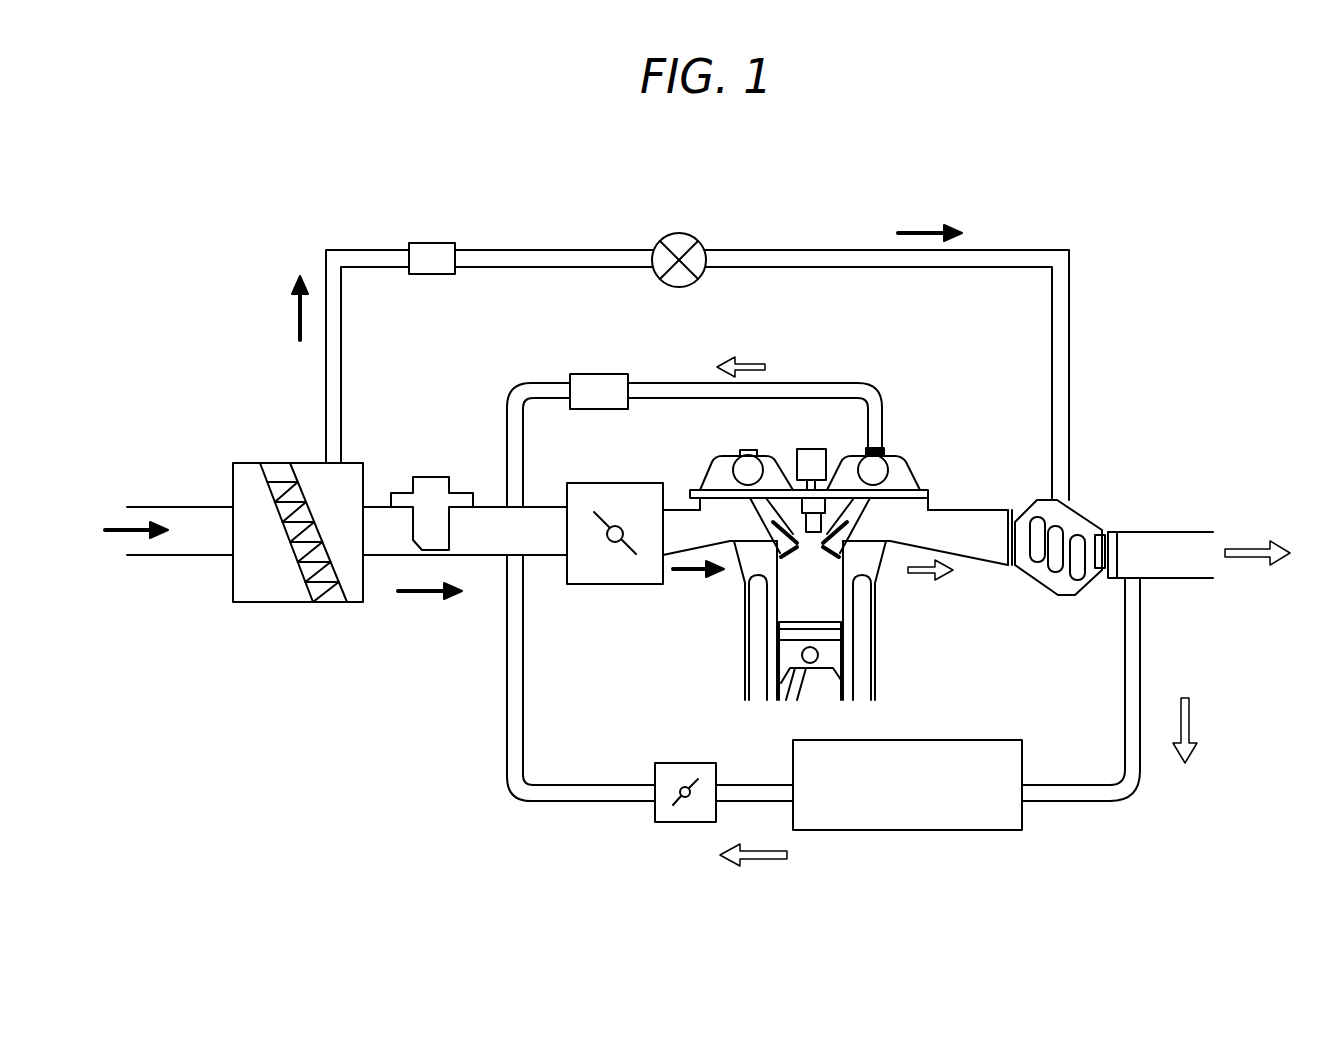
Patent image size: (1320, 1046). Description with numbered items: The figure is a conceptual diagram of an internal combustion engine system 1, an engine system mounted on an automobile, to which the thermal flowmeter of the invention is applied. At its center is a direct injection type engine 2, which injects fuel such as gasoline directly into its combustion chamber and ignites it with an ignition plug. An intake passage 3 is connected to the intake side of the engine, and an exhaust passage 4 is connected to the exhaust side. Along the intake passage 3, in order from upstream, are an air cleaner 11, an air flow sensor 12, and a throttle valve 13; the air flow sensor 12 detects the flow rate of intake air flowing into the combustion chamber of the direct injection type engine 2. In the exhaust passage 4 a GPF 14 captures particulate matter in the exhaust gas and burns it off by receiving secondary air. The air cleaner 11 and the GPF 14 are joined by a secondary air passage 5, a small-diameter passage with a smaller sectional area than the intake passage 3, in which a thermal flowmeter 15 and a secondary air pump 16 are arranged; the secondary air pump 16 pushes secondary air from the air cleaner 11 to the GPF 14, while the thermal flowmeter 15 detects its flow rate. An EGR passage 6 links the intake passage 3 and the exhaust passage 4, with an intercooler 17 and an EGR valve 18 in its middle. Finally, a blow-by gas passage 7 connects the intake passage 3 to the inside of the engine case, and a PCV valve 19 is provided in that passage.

The internal combustion engine system 1 is at (1118, 203).
The direct injection type engine 2 is at (903, 470).
The intake passage 3 is at (172, 505).
The exhaust passage 4 is at (1188, 550).
The secondary air passage 5 is at (585, 248).
The EGR passage 6 is at (1125, 656).
The blow-by gas passage 7 is at (547, 398).
The air cleaner 11 is at (270, 596).
The air flow sensor 12 is at (430, 477).
The throttle valve 13 is at (588, 565).
The GPF (gasoline particulate filter) 14 is at (1075, 527).
The thermal flowmeter 15 is at (433, 243).
The secondary air pump 16 is at (686, 233).
The intercooler 17 is at (966, 748).
The EGR valve 18 is at (671, 768).
The PCV valve 19 is at (603, 385).